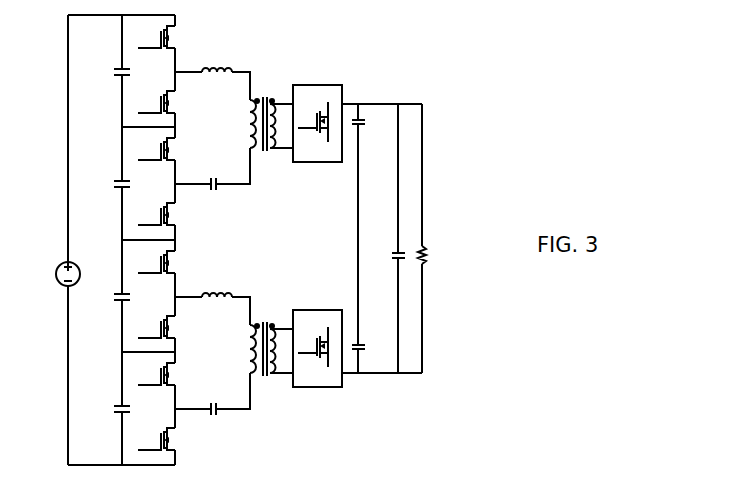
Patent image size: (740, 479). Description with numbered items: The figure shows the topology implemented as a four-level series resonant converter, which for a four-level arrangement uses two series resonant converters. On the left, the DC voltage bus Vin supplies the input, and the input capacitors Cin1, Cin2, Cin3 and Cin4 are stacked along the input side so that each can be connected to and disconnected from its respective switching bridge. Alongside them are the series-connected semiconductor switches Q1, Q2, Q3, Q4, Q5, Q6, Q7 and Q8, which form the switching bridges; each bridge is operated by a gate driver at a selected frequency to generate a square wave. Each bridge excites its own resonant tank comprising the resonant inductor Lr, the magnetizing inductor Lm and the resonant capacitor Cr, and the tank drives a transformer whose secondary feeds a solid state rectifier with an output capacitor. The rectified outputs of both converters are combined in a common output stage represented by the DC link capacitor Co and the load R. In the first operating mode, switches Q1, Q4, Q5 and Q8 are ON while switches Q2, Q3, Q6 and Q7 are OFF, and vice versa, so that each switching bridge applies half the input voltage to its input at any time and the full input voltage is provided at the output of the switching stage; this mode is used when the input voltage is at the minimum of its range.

The DC voltage bus Vin is at (62, 274).
The input capacitor Cin1 is at (137, 72).
The input capacitor Cin2 is at (137, 184).
The input capacitor Cin3 is at (137, 297).
The input capacitor Cin4 is at (137, 409).
The switch Q1 is at (156, 37).
The switch Q2 is at (156, 102).
The switch Q3 is at (156, 149).
The switch Q4 is at (156, 214).
The switch Q5 is at (156, 262).
The switch Q6 is at (156, 327).
The switch Q7 is at (156, 374).
The switch Q8 is at (156, 439).
The resonant inductor Lr is at (217, 172).
The magnetizing inductor Lm is at (242, 236).
The resonant capacitor Cr is at (213, 287).
The DC link capacitor Co is at (386, 254).
The load R is at (429, 255).